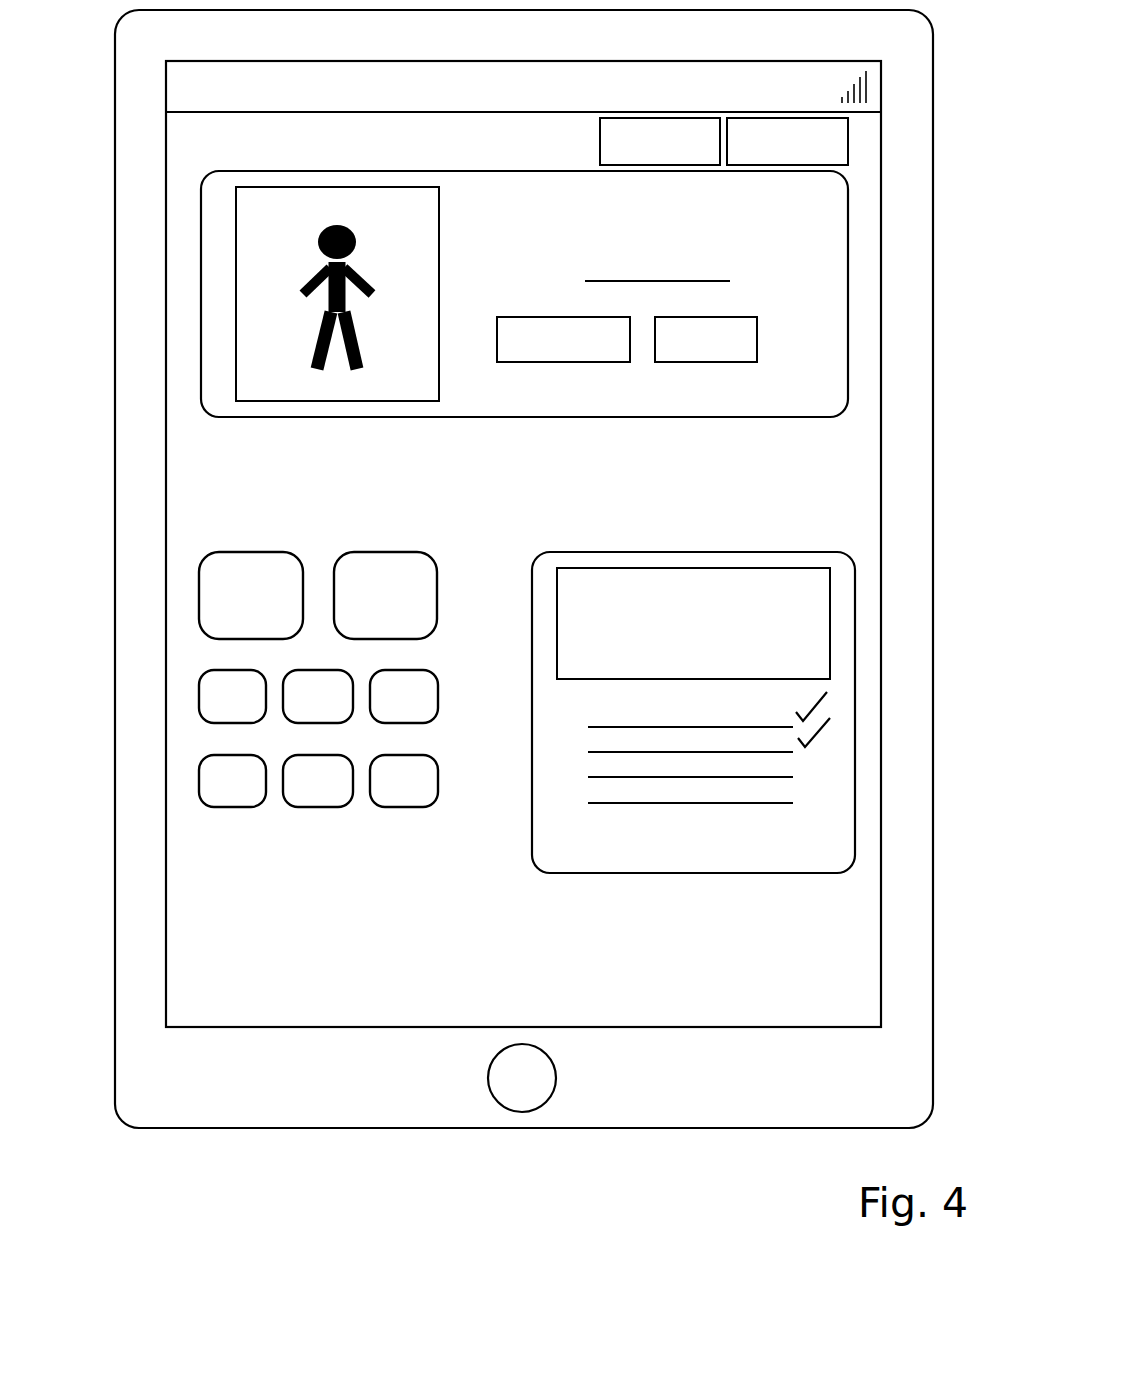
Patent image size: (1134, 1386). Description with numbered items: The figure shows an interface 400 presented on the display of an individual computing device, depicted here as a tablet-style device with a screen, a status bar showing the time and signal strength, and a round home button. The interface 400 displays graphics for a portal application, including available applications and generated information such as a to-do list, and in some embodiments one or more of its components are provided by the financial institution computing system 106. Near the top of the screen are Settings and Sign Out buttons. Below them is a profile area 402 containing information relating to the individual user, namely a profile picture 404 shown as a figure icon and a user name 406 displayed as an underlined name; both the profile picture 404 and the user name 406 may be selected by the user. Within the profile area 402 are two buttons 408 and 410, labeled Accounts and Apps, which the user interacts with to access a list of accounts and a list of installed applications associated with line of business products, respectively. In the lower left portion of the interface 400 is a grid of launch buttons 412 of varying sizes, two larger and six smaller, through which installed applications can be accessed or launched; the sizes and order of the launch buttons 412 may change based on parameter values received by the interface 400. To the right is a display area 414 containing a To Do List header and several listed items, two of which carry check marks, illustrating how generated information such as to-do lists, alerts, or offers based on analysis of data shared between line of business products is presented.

The financial institution computing system 106 is at (94, 66).
The interface 400 is at (881, 172).
The profile area 402 is at (198, 227).
The profile picture 404 is at (397, 223).
The user name 406 is at (688, 253).
The button 408 is at (540, 314).
The button 410 is at (707, 314).
The launch buttons 412 is at (222, 599).
The display area 414 is at (830, 637).